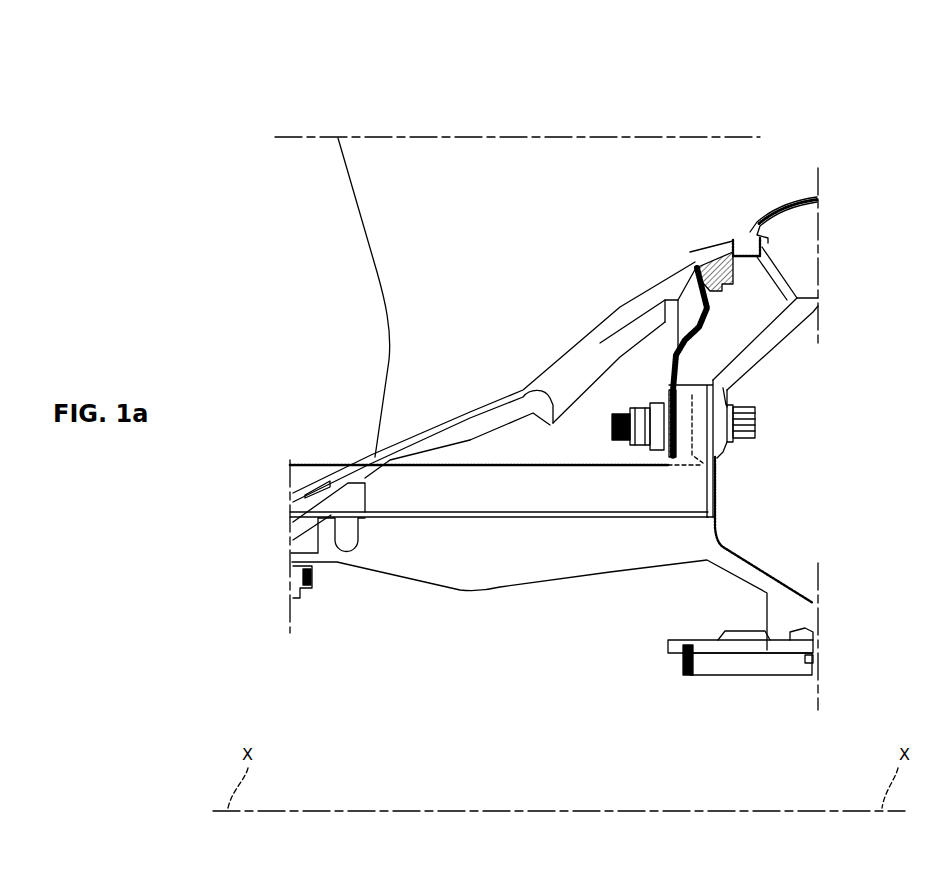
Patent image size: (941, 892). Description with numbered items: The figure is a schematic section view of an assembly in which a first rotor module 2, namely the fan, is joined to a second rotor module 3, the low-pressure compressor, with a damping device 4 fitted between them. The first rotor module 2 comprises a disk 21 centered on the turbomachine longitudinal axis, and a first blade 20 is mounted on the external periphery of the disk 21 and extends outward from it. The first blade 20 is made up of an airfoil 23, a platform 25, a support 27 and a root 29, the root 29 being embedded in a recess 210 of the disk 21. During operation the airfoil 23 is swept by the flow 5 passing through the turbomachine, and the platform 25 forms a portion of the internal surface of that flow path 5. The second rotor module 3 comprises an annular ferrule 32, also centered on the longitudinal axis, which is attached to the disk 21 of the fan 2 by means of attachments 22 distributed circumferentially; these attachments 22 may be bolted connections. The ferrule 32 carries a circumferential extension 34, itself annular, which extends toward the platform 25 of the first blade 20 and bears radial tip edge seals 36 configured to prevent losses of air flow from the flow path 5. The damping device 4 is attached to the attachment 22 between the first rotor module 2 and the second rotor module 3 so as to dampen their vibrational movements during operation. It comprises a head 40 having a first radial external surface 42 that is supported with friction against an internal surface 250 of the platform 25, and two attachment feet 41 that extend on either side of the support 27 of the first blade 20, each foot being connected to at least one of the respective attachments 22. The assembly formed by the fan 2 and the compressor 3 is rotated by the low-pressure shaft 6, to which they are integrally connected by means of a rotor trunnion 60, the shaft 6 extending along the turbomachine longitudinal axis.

The first rotor module 2 is at (245, 553).
The second rotor module 3 is at (877, 496).
The damping device 4 is at (700, 267).
The flow path 5 is at (311, 316).
The low-pressure shaft 6 is at (745, 663).
The first blade 20 is at (268, 362).
The disk 21 is at (536, 559).
The attachments 22 is at (637, 445).
The airfoil 23 is at (536, 238).
The platform 25 is at (582, 338).
The support 27 is at (662, 350).
The root 29 is at (536, 499).
The annular ferrule 32 is at (762, 350).
The circumferential extension 34 is at (775, 278).
The radial tip edge seals 36 is at (770, 243).
The head 40 is at (715, 282).
The attachment feet 41 is at (690, 334).
The first radial external surface 42 is at (717, 243).
The rotor trunnion 60 is at (752, 575).
The recess 210 is at (365, 512).
The internal surface 250 is at (680, 307).